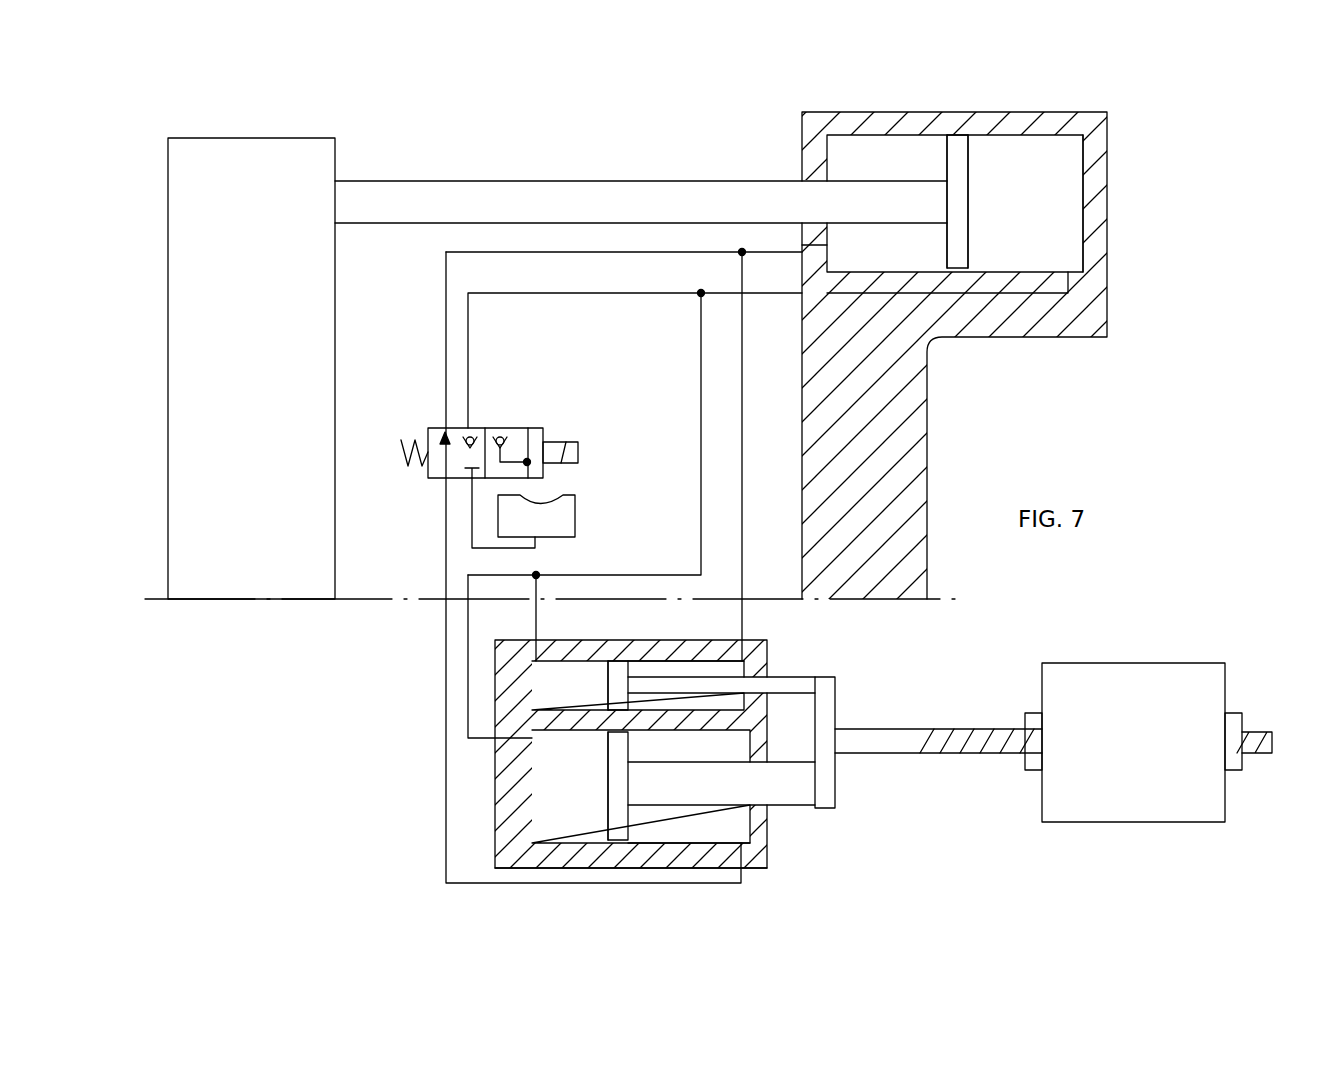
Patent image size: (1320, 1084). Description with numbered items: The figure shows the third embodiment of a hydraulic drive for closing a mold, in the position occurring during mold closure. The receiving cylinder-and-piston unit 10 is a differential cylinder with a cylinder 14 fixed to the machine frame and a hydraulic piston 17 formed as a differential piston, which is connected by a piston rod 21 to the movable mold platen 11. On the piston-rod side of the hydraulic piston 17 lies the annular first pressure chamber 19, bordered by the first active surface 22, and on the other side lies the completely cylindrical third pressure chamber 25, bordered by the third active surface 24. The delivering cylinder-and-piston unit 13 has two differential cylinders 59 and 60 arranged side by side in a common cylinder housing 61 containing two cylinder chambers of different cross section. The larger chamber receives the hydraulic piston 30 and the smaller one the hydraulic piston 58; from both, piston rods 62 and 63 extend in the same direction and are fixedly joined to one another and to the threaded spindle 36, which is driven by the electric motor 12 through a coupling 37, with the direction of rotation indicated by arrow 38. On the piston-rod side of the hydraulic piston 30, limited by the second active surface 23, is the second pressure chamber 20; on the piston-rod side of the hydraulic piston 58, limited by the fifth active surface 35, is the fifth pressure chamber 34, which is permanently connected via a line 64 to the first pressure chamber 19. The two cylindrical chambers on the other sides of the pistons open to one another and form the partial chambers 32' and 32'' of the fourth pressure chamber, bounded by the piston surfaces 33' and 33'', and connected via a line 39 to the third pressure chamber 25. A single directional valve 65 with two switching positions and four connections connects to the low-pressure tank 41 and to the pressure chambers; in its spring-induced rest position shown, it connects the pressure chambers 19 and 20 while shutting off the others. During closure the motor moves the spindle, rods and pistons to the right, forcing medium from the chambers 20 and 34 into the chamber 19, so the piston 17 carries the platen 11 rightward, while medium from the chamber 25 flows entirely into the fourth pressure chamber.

The receiving cylinder-and-piston unit 10 is at (770, 150).
The movable mold platen 11 is at (292, 308).
The electric motor 12 is at (1132, 695).
The delivering cylinder-and-piston unit 13 is at (410, 794).
The cylinder 14 is at (1037, 122).
The hydraulic piston 17 is at (957, 157).
The first pressure chamber 19 is at (868, 167).
The second pressure chamber 20 is at (768, 866).
The piston rod 21 is at (577, 193).
The first active surface 22 is at (946, 247).
The second active surface 23 is at (632, 818).
The third active surface 24 is at (975, 247).
The third pressure chamber 25 is at (1055, 181).
The hydraulic piston 30 is at (618, 830).
The partial chamber 32' is at (554, 786).
The partial chamber 32'' is at (559, 669).
The piston surface 33' is at (602, 833).
The piston surface 33'' is at (596, 656).
The fifth pressure chamber 34 is at (700, 670).
The fifth active surface 35 is at (633, 667).
The threaded spindle 36 is at (990, 740).
The coupling 37 is at (1030, 763).
The direction of rotation 38 is at (990, 781).
The line 39 is at (700, 393).
The low-pressure tank 41 is at (575, 525).
The hydraulic piston 58 is at (619, 662).
The differential cylinder 59 is at (470, 820).
The differential cylinder 60 is at (472, 692).
The common cylinder housing 61 is at (507, 840).
The piston rod 62 is at (783, 783).
The piston rod 63 is at (795, 677).
The line 64 is at (745, 481).
The directional valve 65 is at (517, 428).